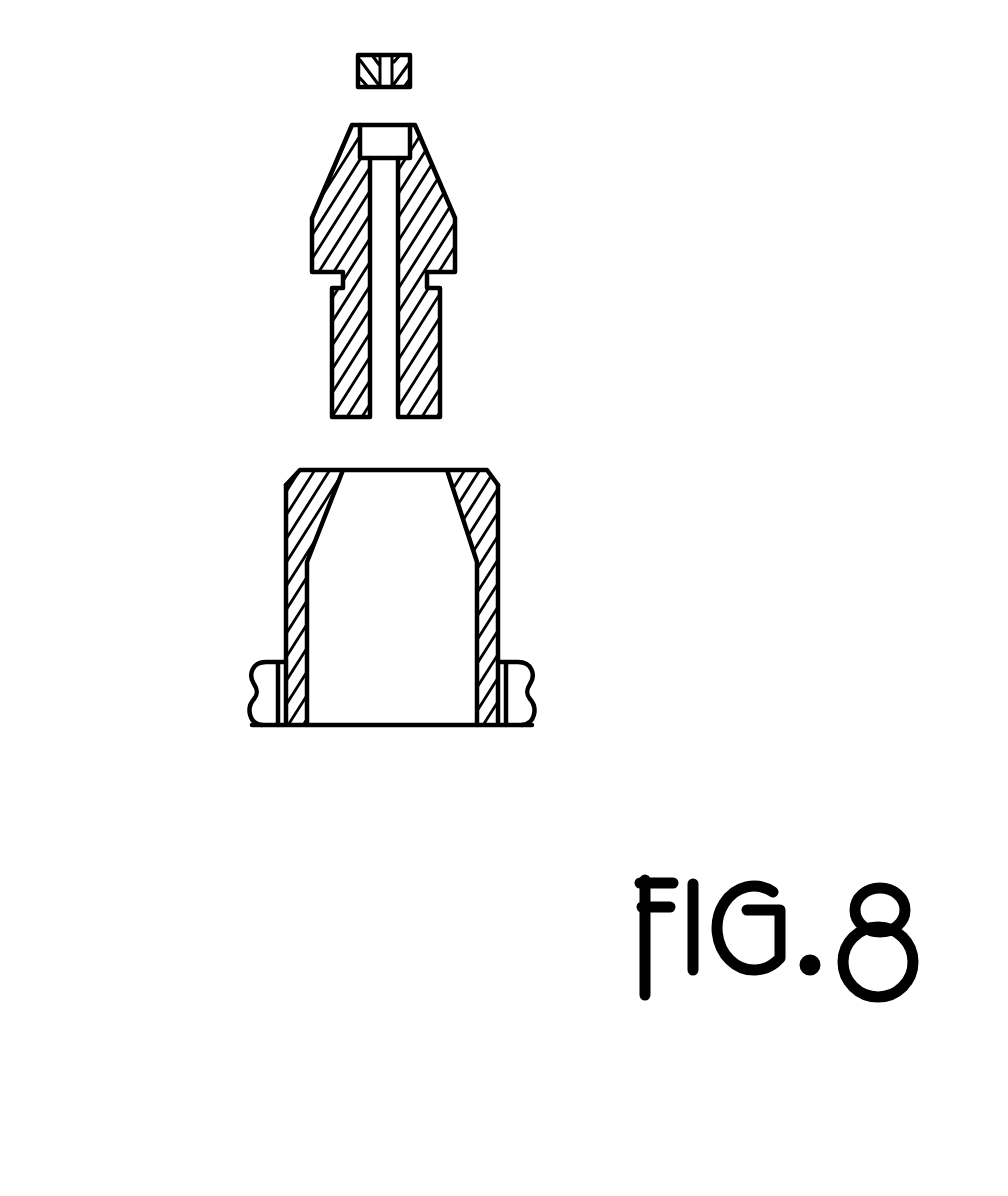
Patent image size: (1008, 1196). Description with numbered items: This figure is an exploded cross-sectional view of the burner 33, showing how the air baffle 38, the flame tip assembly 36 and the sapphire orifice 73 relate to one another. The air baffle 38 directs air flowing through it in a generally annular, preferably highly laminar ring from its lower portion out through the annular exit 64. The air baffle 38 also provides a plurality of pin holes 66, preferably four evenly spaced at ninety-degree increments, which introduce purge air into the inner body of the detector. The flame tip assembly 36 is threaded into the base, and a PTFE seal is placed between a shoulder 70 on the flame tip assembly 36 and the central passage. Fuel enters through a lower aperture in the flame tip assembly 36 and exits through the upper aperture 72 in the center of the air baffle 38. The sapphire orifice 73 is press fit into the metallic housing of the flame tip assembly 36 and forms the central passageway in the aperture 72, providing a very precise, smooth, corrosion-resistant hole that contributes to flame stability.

The burner 33 is at (187, 8).
The flame tip assembly 36 is at (500, 228).
The air baffle 38 is at (540, 546).
The annular exit 64 is at (425, 470).
The pin holes 66 is at (267, 660).
The shoulder 70 is at (433, 275).
The upper aperture 72 is at (388, 138).
The sapphire orifice 73 is at (410, 66).